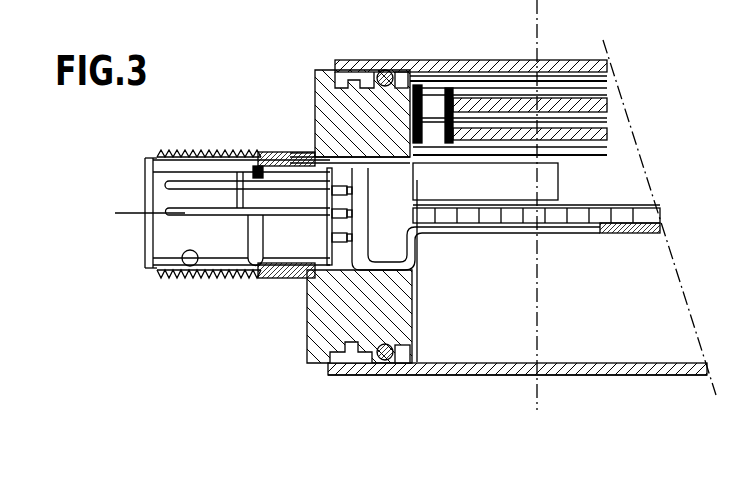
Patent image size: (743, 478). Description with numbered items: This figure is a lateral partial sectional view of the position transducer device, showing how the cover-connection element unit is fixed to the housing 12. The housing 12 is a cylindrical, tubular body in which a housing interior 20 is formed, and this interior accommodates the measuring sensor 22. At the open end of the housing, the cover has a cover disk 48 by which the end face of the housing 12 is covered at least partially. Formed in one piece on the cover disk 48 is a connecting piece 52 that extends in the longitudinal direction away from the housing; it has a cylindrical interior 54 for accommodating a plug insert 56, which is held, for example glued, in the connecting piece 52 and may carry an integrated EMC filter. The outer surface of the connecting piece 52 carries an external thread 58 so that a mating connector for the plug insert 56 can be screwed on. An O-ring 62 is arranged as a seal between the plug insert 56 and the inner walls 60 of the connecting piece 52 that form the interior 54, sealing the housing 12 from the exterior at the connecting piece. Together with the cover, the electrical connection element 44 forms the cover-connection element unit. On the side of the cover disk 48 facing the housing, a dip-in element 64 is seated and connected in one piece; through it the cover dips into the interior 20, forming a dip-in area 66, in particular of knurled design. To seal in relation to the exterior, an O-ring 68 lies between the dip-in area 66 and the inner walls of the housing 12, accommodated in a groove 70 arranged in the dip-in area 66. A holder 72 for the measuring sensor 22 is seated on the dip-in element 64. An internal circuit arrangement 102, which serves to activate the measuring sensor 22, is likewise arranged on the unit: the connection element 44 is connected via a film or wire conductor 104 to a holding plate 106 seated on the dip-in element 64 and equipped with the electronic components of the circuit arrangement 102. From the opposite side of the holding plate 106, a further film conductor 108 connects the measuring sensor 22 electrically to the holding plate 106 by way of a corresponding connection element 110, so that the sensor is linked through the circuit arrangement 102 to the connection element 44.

The housing 12 is at (482, 60).
The housing interior 20 is at (533, 365).
The measuring sensor 22 is at (618, 100).
The electrical connection element 44 is at (146, 272).
The cover disk 48 is at (316, 365).
The connecting piece 52 is at (185, 150).
The cylindrical interior 54 is at (197, 279).
The plug insert 56 is at (285, 212).
The external thread 58 is at (228, 150).
The inner walls 60 is at (300, 157).
The O-ring 62 is at (258, 165).
The dip-in element 64 is at (413, 345).
The dip-in area 66 is at (372, 356).
The O-ring 68 is at (378, 68).
The groove 70 is at (398, 68).
The holder 72 is at (580, 75).
The circuit arrangement 102 is at (490, 208).
The film conductor 104 is at (413, 258).
The holding plate 106 is at (612, 221).
The film conductor 108 is at (513, 195).
The connection element 110 is at (548, 175).